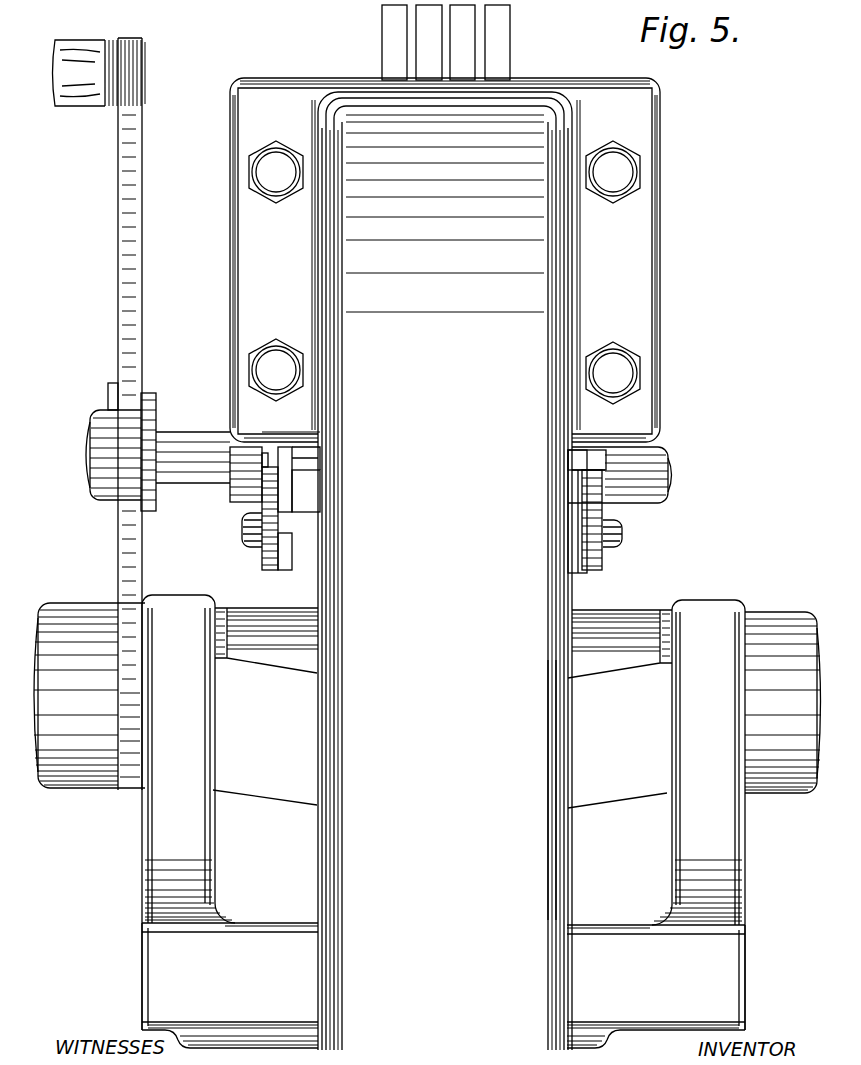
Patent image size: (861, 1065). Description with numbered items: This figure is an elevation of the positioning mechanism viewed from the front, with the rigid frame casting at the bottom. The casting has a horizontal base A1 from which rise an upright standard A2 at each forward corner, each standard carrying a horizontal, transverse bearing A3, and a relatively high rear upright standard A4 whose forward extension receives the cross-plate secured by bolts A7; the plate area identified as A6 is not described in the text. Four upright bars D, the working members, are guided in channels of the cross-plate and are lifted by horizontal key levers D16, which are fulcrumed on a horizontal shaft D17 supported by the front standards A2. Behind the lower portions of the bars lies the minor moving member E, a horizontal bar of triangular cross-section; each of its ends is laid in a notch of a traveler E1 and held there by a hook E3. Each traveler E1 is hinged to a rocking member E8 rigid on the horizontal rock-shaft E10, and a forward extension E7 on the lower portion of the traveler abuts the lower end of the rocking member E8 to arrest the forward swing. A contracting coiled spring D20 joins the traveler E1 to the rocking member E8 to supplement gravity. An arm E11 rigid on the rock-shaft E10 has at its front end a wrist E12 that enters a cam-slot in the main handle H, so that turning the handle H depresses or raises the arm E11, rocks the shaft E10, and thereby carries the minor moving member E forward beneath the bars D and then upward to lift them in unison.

The bar D is at (377, 27).
The frame plate A6 is at (256, 115).
The bolts A7 is at (622, 172).
The main handle H is at (126, 186).
The wrist E12 is at (110, 392).
The arm E11 is at (150, 407).
The rock-shaft E10 is at (90, 432).
The rocking member E8 is at (655, 490).
The hook E3 is at (262, 456).
The minor moving member E is at (310, 510).
The traveler E1 is at (270, 500).
The contracting coiled spring D20 is at (246, 536).
The forward extension E7 is at (285, 568).
The horizontal shaft D17 is at (38, 792).
The upright standard A2 is at (156, 850).
The horizontal, transverse bearing A3 is at (737, 600).
The key lever D16 is at (292, 792).
The upright standard A4 is at (546, 870).
The horizontal base A1 is at (166, 980).